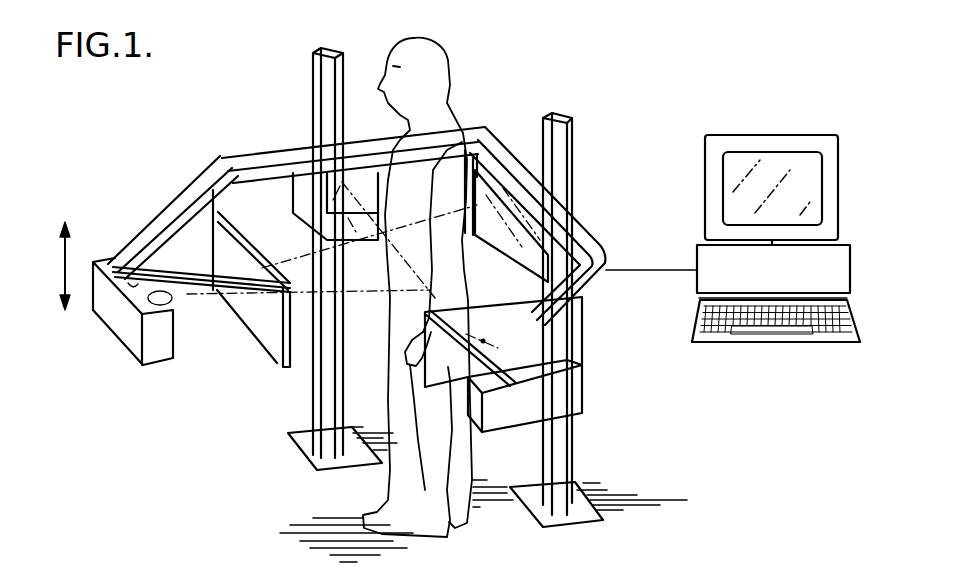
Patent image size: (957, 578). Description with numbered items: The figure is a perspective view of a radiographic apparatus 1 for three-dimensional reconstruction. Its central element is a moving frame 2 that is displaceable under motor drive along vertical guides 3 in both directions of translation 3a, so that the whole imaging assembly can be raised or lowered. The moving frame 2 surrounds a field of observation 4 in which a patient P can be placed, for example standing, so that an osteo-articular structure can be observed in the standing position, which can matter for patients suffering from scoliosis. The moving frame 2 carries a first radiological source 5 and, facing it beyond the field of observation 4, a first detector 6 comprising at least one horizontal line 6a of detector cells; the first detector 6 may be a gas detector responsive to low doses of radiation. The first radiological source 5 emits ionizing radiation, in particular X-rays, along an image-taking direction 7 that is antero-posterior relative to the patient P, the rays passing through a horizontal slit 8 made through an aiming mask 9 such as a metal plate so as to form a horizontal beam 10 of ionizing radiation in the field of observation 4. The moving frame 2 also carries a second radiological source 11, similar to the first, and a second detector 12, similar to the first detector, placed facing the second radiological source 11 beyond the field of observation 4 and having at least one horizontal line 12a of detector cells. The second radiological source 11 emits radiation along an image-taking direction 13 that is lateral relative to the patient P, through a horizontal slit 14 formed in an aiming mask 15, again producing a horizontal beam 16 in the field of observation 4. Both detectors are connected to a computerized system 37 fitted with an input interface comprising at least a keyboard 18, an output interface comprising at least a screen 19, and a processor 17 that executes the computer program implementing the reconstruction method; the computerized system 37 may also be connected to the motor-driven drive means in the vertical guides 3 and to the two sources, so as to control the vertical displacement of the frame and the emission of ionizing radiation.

The radiographic apparatus 1 is at (631, 83).
The moving frame 2 is at (372, 203).
The vertical guides 3 is at (434, 275).
The directions of translation 3a is at (45, 266).
The field of observation 4 is at (473, 53).
The first radiological source 5 is at (133, 335).
The first detector 6 is at (583, 226).
The horizontal line of detector cells 6a is at (604, 308).
The image-taking direction 7 is at (306, 338).
The horizontal slit 8 is at (250, 279).
The aiming mask 9 is at (201, 332).
The horizontal beam 10 is at (352, 187).
The second radiological source 11 is at (553, 396).
The second detector 12 is at (351, 192).
The horizontal line of detector cells 12a is at (360, 122).
The image-taking direction 13 is at (561, 348).
The horizontal slit 14 is at (526, 342).
The aiming mask 15 is at (483, 466).
The horizontal beam 16 is at (543, 216).
The processor 17 is at (794, 271).
The keyboard 18 is at (776, 349).
The screen 19 is at (772, 147).
The computerized system 37 is at (794, 157).
The patient P is at (441, 287).